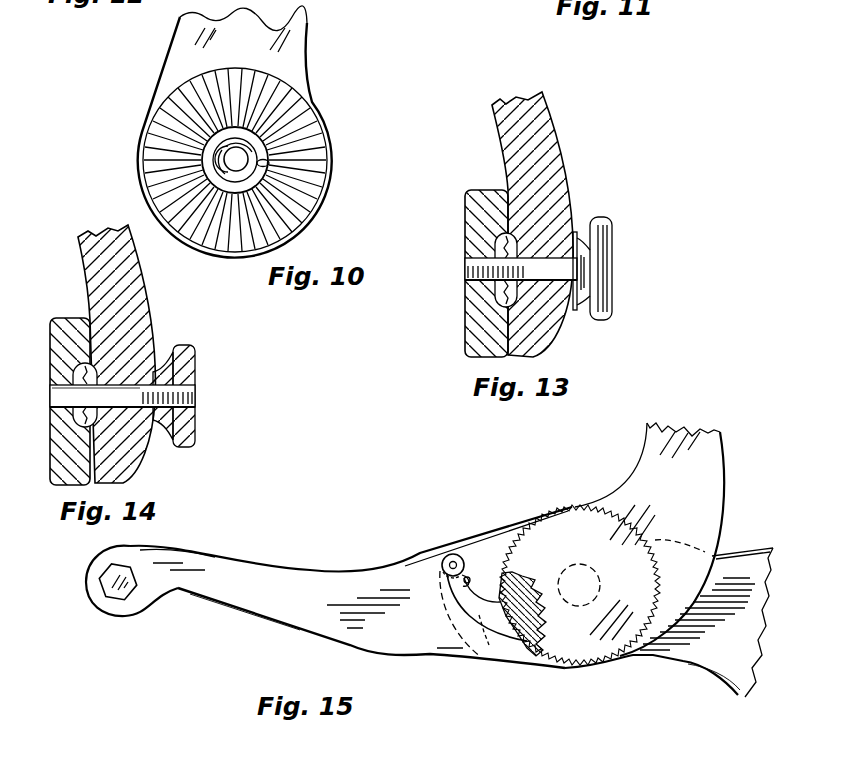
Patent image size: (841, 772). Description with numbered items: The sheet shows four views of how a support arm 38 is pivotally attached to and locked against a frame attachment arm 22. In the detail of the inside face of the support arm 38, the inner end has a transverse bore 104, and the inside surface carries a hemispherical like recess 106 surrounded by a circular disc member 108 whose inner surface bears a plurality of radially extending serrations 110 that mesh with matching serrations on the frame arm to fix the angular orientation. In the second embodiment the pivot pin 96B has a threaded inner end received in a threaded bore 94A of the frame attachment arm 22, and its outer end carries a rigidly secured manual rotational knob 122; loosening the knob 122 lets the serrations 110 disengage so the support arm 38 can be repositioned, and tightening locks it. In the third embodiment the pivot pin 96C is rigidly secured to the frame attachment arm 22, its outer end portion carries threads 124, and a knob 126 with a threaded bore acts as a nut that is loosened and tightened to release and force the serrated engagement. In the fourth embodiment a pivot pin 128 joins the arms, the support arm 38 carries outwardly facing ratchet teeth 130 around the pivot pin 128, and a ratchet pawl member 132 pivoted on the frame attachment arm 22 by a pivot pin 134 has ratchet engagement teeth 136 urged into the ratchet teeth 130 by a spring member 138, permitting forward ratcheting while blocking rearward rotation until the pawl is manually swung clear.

In FIG. 13, the frame attachment arm 22 is at (467, 301).
In FIG. 14, the frame attachment arm 22 is at (63, 320).
In FIG. 15, the frame attachment arm 22 is at (258, 570).
In FIG. 10, the support arm 38 is at (300, 48).
In FIG. 13, the support arm 38 is at (556, 150).
In FIG. 14, the support arm 38 is at (136, 284).
In FIG. 15, the support arm 38 is at (708, 468).
In FIG. 13, the threaded bolt 94A is at (467, 263).
In FIG. 13, the pivot pin 96B is at (543, 271).
In FIG. 14, the pivot pin 96C is at (122, 404).
In FIG. 10, the transverse bore 104 is at (257, 181).
In FIG. 10, the hemispherical like recess 106 is at (269, 163).
In FIG. 10, the circular disc member 108 is at (268, 137).
In FIG. 10, the radially extending serrations 110 is at (273, 104).
In FIG. 13, the manual rotational knob 122 is at (608, 221).
In FIG. 14, the threads 124 is at (197, 397).
In FIG. 14, the knob 126 is at (188, 351).
In FIG. 15, the pivot pin 128 is at (579, 564).
In FIG. 15, the ratchet teeth 130 is at (497, 601).
In FIG. 15, the ratchet pawl member 132 is at (512, 646).
In FIG. 15, the pivot pin 134 is at (456, 568).
In FIG. 15, the ratchet engagement teeth 136 is at (539, 634).
In FIG. 15, the spring member 138 is at (447, 566).